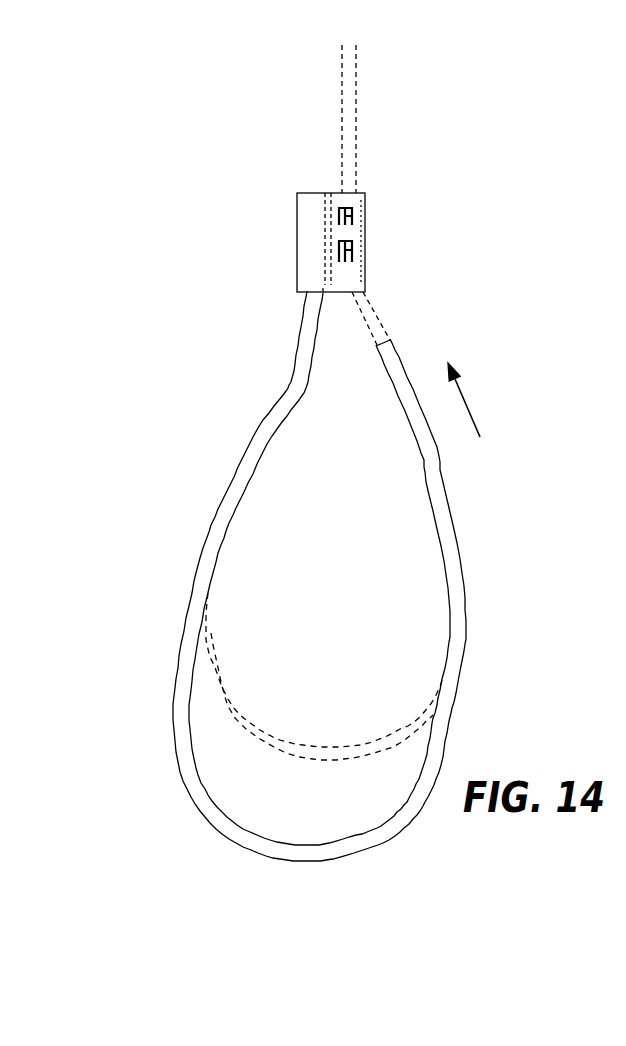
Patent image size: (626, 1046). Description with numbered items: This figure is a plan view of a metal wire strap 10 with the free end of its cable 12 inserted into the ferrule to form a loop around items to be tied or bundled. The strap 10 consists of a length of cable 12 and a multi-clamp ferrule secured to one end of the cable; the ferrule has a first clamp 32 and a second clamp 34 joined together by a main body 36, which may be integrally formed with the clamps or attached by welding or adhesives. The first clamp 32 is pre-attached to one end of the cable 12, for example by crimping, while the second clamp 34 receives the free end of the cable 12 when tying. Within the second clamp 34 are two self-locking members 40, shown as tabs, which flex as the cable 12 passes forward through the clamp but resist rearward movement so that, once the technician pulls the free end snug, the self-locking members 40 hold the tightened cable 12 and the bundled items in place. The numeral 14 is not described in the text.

The strap 10 is at (450, 149).
The cable 12 is at (176, 553).
The fastener head 14 is at (281, 197).
The first clamp 32 is at (297, 222).
The second clamp 34 is at (366, 273).
The main body 36 is at (330, 293).
The self-locking members 40 is at (353, 213).